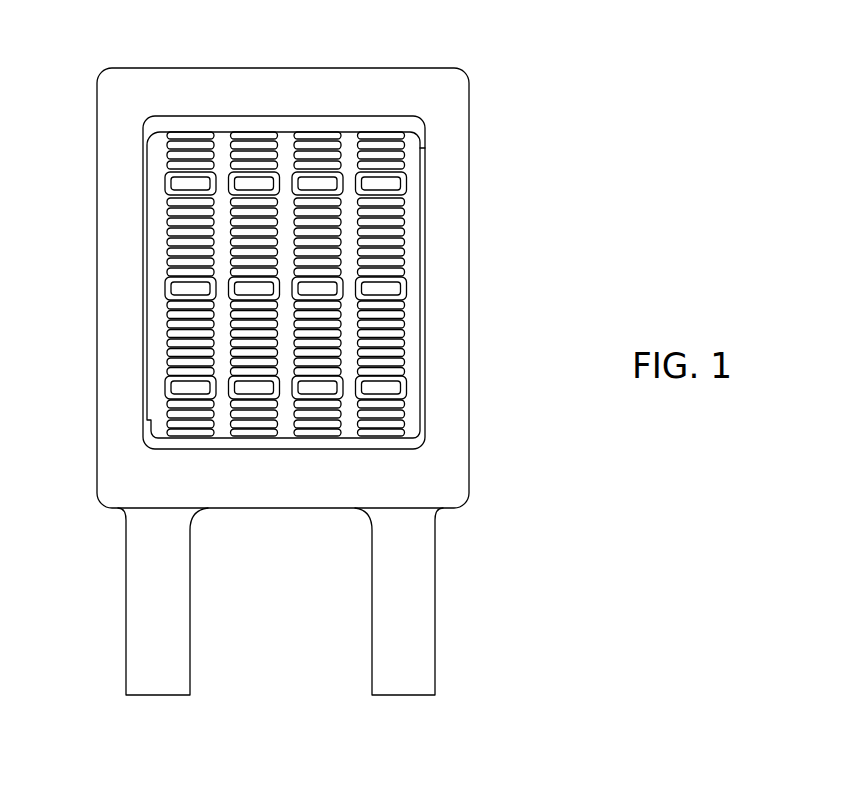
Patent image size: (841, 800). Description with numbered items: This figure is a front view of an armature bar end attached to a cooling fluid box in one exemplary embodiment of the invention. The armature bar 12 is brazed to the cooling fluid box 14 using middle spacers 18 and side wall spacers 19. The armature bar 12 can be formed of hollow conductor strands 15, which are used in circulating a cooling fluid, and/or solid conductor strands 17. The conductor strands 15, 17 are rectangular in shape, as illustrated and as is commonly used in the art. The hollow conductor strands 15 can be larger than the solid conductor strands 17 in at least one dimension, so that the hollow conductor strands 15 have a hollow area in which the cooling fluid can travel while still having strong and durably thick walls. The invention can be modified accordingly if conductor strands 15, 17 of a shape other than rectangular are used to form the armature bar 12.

The armature bar 12 is at (80, 129).
The cooling fluid box 14 is at (469, 107).
The hollow conductor strands 15 is at (405, 181).
The solid conductor strands 17 is at (388, 263).
The middle spacers 18 is at (348, 145).
The side wall spacers 19 is at (160, 137).